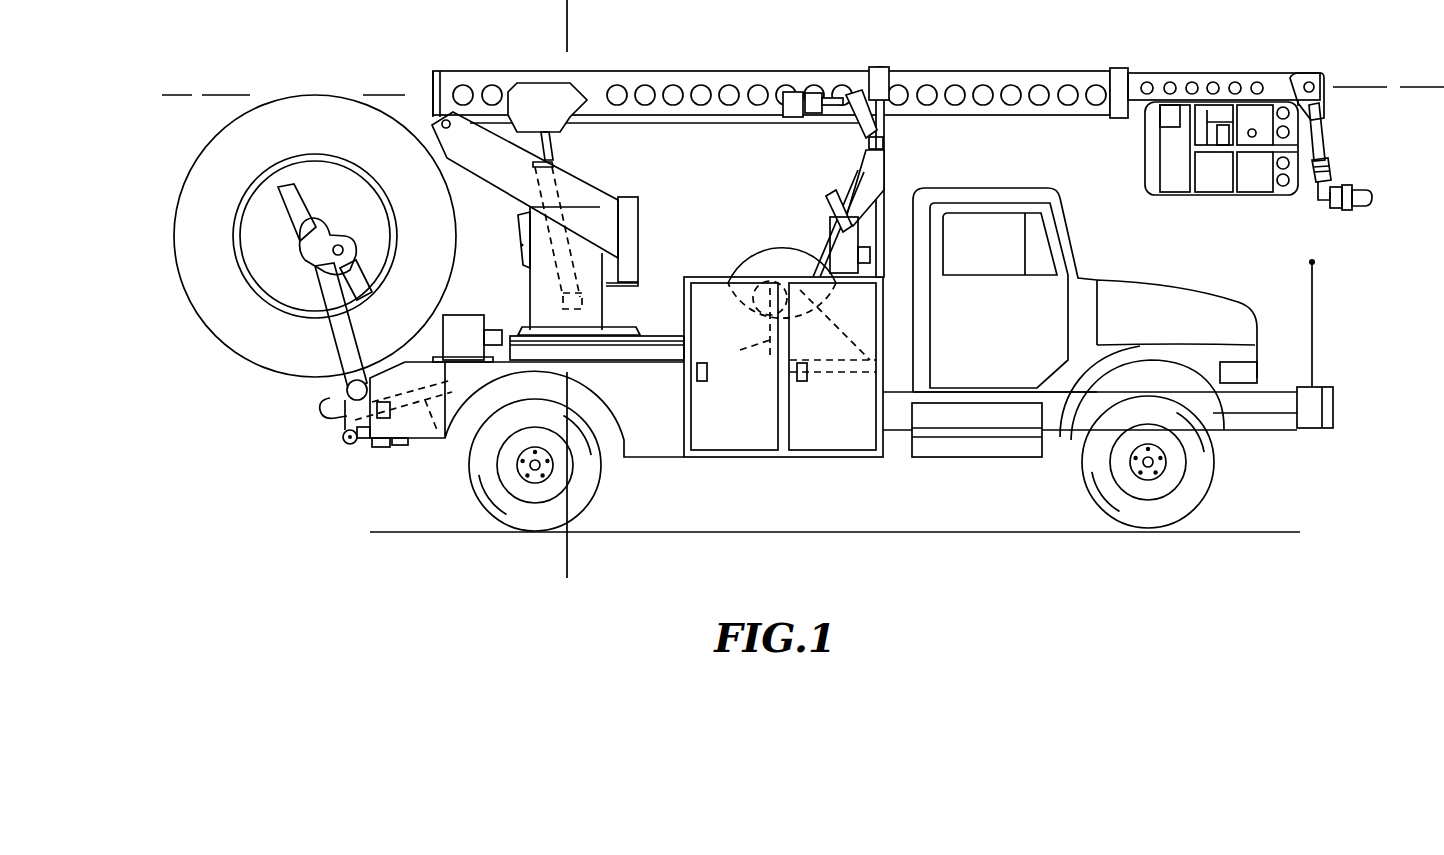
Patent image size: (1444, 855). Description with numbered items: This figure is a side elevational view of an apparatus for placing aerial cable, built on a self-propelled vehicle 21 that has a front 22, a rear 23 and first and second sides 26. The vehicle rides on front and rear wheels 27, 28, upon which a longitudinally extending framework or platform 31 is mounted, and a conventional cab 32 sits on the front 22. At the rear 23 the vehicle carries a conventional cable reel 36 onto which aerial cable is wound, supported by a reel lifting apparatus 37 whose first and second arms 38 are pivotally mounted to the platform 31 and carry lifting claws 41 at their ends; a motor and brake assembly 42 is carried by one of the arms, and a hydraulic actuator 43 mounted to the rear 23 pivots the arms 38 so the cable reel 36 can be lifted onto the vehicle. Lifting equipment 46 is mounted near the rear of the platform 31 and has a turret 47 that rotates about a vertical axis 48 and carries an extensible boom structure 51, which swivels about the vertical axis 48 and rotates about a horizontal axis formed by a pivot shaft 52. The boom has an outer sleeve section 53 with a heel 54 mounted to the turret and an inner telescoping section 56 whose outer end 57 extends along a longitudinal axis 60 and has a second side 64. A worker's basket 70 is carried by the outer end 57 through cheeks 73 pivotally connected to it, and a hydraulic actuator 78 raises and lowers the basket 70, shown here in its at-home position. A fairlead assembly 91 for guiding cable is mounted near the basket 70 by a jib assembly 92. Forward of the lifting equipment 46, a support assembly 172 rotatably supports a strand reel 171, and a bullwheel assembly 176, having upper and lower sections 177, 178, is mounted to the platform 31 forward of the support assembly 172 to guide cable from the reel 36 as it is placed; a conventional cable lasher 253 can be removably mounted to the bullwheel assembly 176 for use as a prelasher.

The self-propelled vehicle 21 is at (1340, 296).
The front 22 is at (1345, 410).
The rear 23 is at (347, 441).
The first and second sides 26 is at (830, 440).
The front wheels 27 is at (1215, 492).
The rear wheels 28 is at (598, 488).
The framework or platform 31 is at (1283, 415).
The cab 32 is at (1077, 243).
The cable reel 36 is at (180, 252).
The reel lifting apparatus 37 is at (330, 362).
The first and second arms 38 is at (335, 334).
The lifting claws 41 is at (288, 206).
The motor and brake assembly 42 is at (343, 233).
The hydraulic actuator 43 is at (437, 420).
The lifting equipment 46 is at (518, 58).
The turret 47 is at (604, 298).
The vertical axis 48 is at (568, 4).
The boom structure 51 is at (714, 68).
The pivot shaft 52 is at (437, 110).
The outer sleeve section 53 is at (1055, 70).
The heel 54 is at (437, 72).
The inner extensible or telescoping section 56 is at (1243, 62).
The outer end 57 is at (1304, 72).
The longitudinal axis 60 is at (1370, 82).
The second side 64 is at (1288, 85).
The basket 70 is at (1205, 197).
The cheeks 73 is at (1322, 113).
The hydraulic actuator 78 is at (1205, 115).
The fairlead assembly 91 is at (1383, 190).
The jib assembly 92 is at (1342, 148).
The strand reel 171 is at (771, 250).
The support assembly 172 is at (775, 362).
The bullwheel assembly 176 is at (895, 166).
The upper section 177 is at (884, 120).
The lower section 178 is at (838, 190).
The cable lashing apparatus or lasher 253 is at (808, 92).